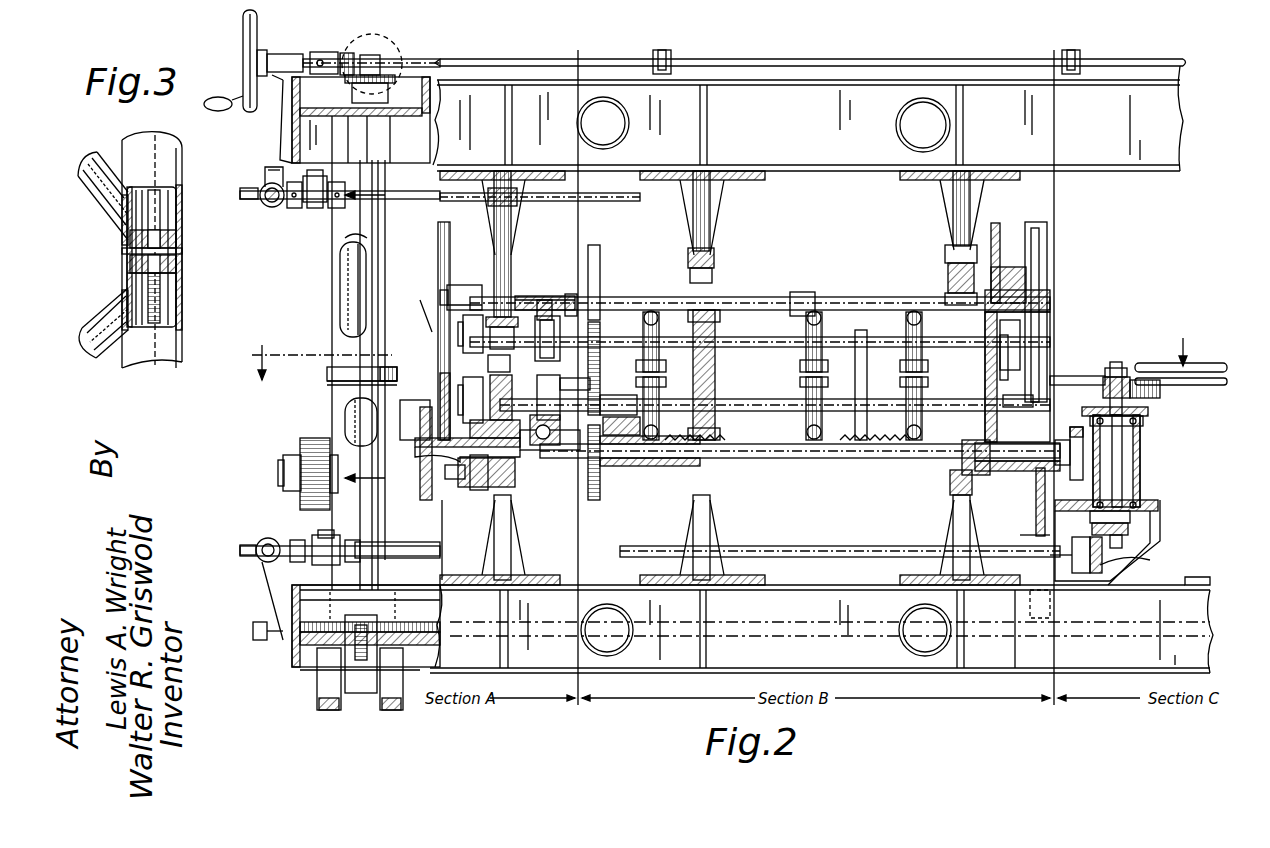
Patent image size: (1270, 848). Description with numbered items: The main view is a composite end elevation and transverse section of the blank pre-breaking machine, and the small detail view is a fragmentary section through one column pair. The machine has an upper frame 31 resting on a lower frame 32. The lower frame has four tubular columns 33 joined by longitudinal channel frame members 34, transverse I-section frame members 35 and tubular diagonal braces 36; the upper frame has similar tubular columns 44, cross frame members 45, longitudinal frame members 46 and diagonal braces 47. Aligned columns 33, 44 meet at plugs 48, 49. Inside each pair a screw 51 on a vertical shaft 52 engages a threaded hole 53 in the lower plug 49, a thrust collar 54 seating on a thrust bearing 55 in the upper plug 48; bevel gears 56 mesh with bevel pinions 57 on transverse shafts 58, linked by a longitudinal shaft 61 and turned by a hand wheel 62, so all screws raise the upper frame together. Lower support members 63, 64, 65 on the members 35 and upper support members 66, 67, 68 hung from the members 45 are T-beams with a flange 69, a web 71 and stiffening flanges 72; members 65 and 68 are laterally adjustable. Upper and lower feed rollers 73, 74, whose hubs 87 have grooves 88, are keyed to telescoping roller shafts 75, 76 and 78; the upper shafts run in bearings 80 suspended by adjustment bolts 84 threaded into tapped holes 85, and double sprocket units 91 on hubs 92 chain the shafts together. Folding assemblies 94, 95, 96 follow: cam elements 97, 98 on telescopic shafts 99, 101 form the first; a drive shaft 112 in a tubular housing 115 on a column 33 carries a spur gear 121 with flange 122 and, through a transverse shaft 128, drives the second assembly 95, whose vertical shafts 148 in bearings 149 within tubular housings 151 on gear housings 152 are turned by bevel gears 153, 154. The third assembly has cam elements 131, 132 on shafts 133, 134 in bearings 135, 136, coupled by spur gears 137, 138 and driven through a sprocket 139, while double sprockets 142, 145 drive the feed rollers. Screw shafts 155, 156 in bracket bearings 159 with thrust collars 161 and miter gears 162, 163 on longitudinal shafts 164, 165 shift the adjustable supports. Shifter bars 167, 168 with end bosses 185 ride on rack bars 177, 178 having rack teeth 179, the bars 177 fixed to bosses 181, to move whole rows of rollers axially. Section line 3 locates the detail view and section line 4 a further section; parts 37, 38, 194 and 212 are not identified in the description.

In FIG. 2, the upper frame 31 is at (310, 376).
In FIG. 2, the lower frame 32 is at (304, 375).
In FIG. 2, the vertical column members 33 is at (387, 534).
In FIG. 3, the vertical column members 33 is at (178, 345).
In FIG. 2, the longitudinal frame members 34 is at (445, 648).
In FIG. 2, the transverse frame members 35 is at (546, 660).
In FIG. 2, the tubular diagonal braces 36 is at (345, 415).
In FIG. 3, the tubular diagonal braces 36 is at (95, 318).
In FIG. 2, the roller 37 is at (322, 673).
In FIG. 2, the roller 38 is at (332, 710).
In FIG. 2, the tubular columns 44 is at (342, 258).
In FIG. 3, the tubular columns 44 is at (168, 162).
In FIG. 2, the cross frame members 45 is at (803, 160).
In FIG. 2, the longitudinal frame members 46 is at (420, 112).
In FIG. 2, the diagonal braces 47 is at (340, 285).
In FIG. 3, the diagonal braces 47 is at (106, 174).
In FIG. 2, the upper plug member 48 is at (335, 365).
In FIG. 3, the upper plug member 48 is at (170, 238).
In FIG. 2, the lower plug member 49 is at (330, 383).
In FIG. 3, the lower plug member 49 is at (172, 264).
In FIG. 3, the screw 51 is at (160, 298).
In FIG. 3, the vertical shaft 52 is at (152, 210).
In FIG. 3, the threaded hole 53 is at (125, 272).
In FIG. 3, the thrust collar 54 is at (125, 250).
In FIG. 3, the thrust bearing 55 is at (163, 230).
In FIG. 2, the beveled gears 56 is at (390, 75).
In FIG. 2, the bevel pinions 57 is at (343, 55).
In FIG. 2, the shafts 58 is at (742, 62).
In FIG. 2, the longitudinally disposed shaft 61 is at (375, 55).
In FIG. 2, the hand wheel 62 is at (243, 57).
In FIG. 2, the left lower support member 63 is at (512, 530).
In FIG. 2, the center lower support member 64 is at (712, 530).
In FIG. 2, the right lower support member 65 is at (952, 500).
In FIG. 2, the left upper support member 66 is at (492, 258).
In FIG. 2, the center upper support member 67 is at (688, 250).
In FIG. 2, the right upper support member 68 is at (947, 244).
In FIG. 2, the horizontal flange portion 69 is at (540, 168).
In FIG. 2, the web portion 71 is at (512, 210).
In FIG. 2, the stiffening flanges 72 is at (952, 540).
In FIG. 2, the upper feed rollers 73 is at (800, 316).
In FIG. 2, the lower feed rollers 74 is at (908, 420).
In FIG. 2, the upper roller shaft section 75 is at (620, 337).
In FIG. 2, the upper roller shaft section 76 is at (858, 385).
In FIG. 2, the lower roller shaft section 78 is at (883, 390).
In FIG. 2, the bearings 80 is at (505, 396).
In FIG. 2, the adjustment rod or bolt 84 is at (512, 268).
In FIG. 2, the tapped hole 85 is at (555, 410).
In FIG. 2, the hub portion 87 is at (561, 329).
In FIG. 2, the circumferential groove 88 is at (900, 345).
In FIG. 2, the double sprocket units 91 is at (606, 384).
In FIG. 2, the common hub 92 is at (585, 374).
In FIG. 2, the first bending and folding assembly 94 is at (425, 400).
In FIG. 2, the second folding cam assembly 95 is at (1181, 385).
In FIG. 2, the third folding cam assembly 96 is at (1017, 380).
In FIG. 2, the upper cam element 97 is at (438, 340).
In FIG. 2, the lower cam element 98 is at (437, 540).
In FIG. 2, the upper telescopic shaft 99 is at (461, 288).
In FIG. 2, the lower telescopic shaft 101 is at (470, 490).
In FIG. 2, the drive shaft 112 is at (283, 464).
In FIG. 2, the tubular housing 115 is at (406, 516).
In FIG. 2, the spur gear 121 is at (330, 490).
In FIG. 2, the flange portion 122 is at (300, 480).
In FIG. 2, the telescopic transverse shaft 128 is at (645, 546).
In FIG. 2, the upper cam element 131 is at (1001, 232).
In FIG. 2, the lower cam element 132 is at (1025, 503).
In FIG. 2, the upper telescoping shaft assembly 133 is at (770, 296).
In FIG. 2, the lower telescoping shaft assembly 134 is at (675, 460).
In FIG. 2, the bearings 135 is at (948, 293).
In FIG. 2, the bearings 136 is at (962, 465).
In FIG. 2, the spur gear 137 is at (1047, 212).
In FIG. 2, the spur gear 138 is at (1046, 383).
In FIG. 2, the sprocket 139 is at (985, 385).
In FIG. 2, the double sprocket unit 142 is at (600, 264).
In FIG. 2, the double sprocket 145 is at (602, 482).
In FIG. 2, the vertical shaft 148 is at (1125, 480).
In FIG. 2, the bearings 149 is at (1130, 419).
In FIG. 2, the tubular housing 151 is at (1140, 444).
In FIG. 2, the gear housing 152 is at (1158, 512).
In FIG. 2, the bevel gear 153 is at (1130, 525).
In FIG. 2, the bevel gear 154 is at (1106, 565).
In FIG. 2, the upper screw shaft 155 is at (540, 207).
In FIG. 2, the lower screw shaft 156 is at (356, 548).
In FIG. 2, the bracket bearings 159 is at (314, 172).
In FIG. 2, the thrust collars 161 is at (337, 208).
In FIG. 2, the miter gears 162 is at (288, 210).
In FIG. 2, the miter gears 163 is at (270, 205).
In FIG. 2, the longitudinal shaft 164 is at (265, 178).
In FIG. 2, the longitudinal shaft 165 is at (262, 562).
In FIG. 2, the upper shifter bars 167 is at (895, 350).
In FIG. 2, the lower shifter bars 168 is at (810, 384).
In FIG. 2, the rack bars 177 is at (565, 470).
In FIG. 2, the rack bars 178 is at (770, 444).
In FIG. 2, the rack teeth 179 is at (624, 415).
In FIG. 2, the bosses 181 is at (545, 288).
In FIG. 2, the bosses 185 is at (765, 310).
In FIG. 2, the collar 194 is at (570, 283).
In FIG. 2, the shaft 212 is at (1218, 386).
In FIG. 2, the section line 3— 3 is at (364, 318).
In FIG. 2, the section line 4 is at (721, 359).